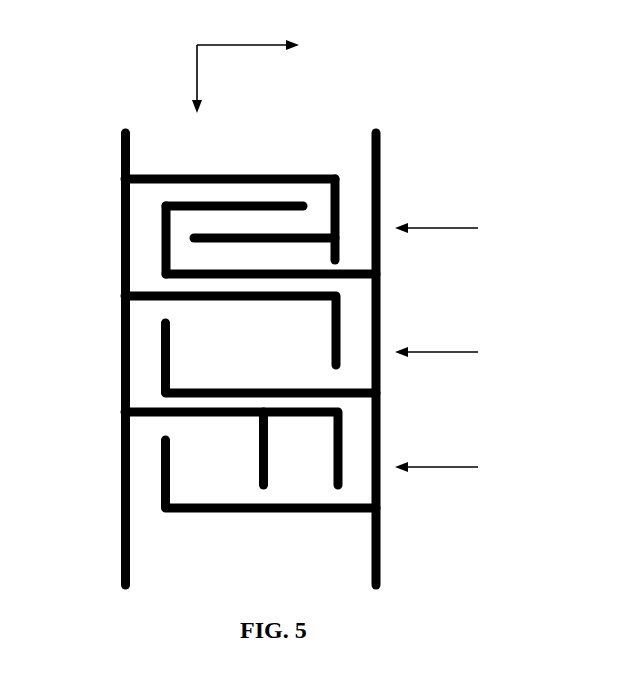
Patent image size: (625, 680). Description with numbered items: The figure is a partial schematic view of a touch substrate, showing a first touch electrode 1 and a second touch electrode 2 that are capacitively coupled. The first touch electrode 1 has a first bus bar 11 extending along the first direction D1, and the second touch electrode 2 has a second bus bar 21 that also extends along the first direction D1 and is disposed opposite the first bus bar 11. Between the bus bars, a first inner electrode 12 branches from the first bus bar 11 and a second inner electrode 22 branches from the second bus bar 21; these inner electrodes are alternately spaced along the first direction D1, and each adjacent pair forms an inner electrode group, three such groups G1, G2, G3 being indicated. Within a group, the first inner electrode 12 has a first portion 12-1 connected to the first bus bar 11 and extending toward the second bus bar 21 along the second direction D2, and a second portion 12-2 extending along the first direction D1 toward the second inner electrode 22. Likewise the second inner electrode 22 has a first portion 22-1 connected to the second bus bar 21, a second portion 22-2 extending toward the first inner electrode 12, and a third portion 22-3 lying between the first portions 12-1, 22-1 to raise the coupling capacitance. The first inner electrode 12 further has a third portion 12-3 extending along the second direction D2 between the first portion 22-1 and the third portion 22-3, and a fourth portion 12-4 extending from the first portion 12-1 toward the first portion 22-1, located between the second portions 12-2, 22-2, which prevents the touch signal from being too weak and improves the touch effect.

The first touch electrode 1 is at (106, 402).
The second touch electrode 2 is at (392, 404).
The first bus bar 11 is at (124, 163).
The second bus bar 21 is at (378, 163).
The first inner electrode 12 is at (297, 160).
The first portion of the first inner electrode 12-1 is at (230, 167).
The second portion of the first inner electrode 12-2 is at (349, 219).
The third portion of the first inner electrode 12-3 is at (264, 227).
The fourth portion of the first inner electrode 12-4 is at (231, 448).
The second inner electrode 22 is at (335, 284).
The first portion of the second inner electrode 22-1 is at (271, 265).
The second portion of the second inner electrode 22-2 is at (177, 240).
The third portion of the second inner electrode 22-3 is at (234, 196).
The inner electrode group G1 is at (451, 234).
The inner electrode group G2 is at (451, 354).
The inner electrode group G3 is at (451, 469).
The first direction D1 is at (184, 79).
The second direction D2 is at (248, 34).